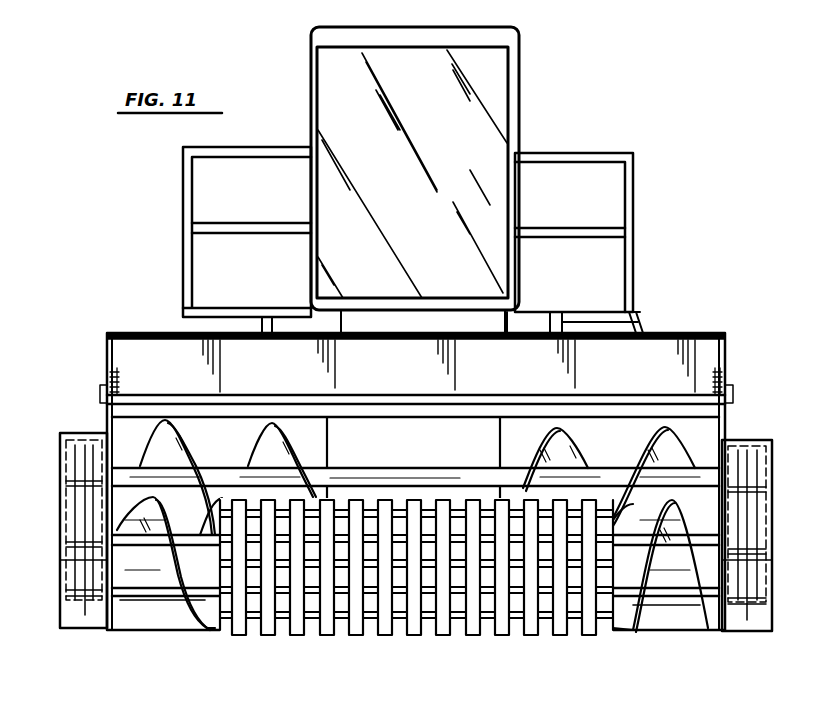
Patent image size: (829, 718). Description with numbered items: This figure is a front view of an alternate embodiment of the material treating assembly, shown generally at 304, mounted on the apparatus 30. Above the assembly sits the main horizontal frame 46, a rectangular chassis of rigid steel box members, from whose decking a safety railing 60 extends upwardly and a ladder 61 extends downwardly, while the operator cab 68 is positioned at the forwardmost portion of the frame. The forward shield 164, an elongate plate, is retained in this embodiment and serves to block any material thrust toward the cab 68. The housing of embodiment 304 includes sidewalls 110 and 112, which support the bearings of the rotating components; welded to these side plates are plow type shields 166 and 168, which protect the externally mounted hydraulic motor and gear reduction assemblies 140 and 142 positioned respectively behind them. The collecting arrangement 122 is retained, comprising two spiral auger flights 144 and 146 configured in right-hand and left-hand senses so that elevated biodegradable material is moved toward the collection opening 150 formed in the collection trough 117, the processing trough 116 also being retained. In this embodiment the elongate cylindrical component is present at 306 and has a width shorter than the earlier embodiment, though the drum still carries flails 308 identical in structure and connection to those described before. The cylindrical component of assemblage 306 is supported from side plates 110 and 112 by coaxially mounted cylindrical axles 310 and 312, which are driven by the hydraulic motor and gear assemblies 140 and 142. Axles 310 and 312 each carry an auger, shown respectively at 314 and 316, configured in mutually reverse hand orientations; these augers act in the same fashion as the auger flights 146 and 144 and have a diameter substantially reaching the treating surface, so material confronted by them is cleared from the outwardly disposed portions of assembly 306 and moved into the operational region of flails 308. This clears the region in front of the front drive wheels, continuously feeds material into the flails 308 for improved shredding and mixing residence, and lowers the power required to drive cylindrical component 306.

The apparatus 30 is at (640, 98).
The operator cab 68 is at (311, 50).
The safety railing 60 is at (258, 148).
The main horizontal frame 46 is at (546, 312).
The ladder 61 is at (644, 331).
The forward shield 164 is at (122, 353).
The sidewall 112 is at (106, 430).
The alternate embodiment of the material treating assembly 304 is at (796, 378).
The sidewall 110 is at (724, 441).
The hydraulic motor and gear reduction assembly 140 is at (750, 514).
The plow type shield 166 is at (755, 616).
The collecting arrangement 122 is at (102, 456).
The hydraulic motor and gear reduction assembly 142 is at (76, 507).
The plow type shield 168 is at (72, 610).
The collection opening 150 is at (424, 459).
The collection trough 117 is at (322, 432).
The auger flight 146 is at (269, 444).
The auger flight 144 is at (564, 452).
The processing trough 116 is at (155, 613).
The cylindrical axle 310 is at (167, 577).
The cylindrical axle 312 is at (668, 582).
The auger 314 is at (210, 630).
The auger 316 is at (622, 632).
The cylindrical component 306 is at (489, 638).
The flails 308 is at (380, 627).